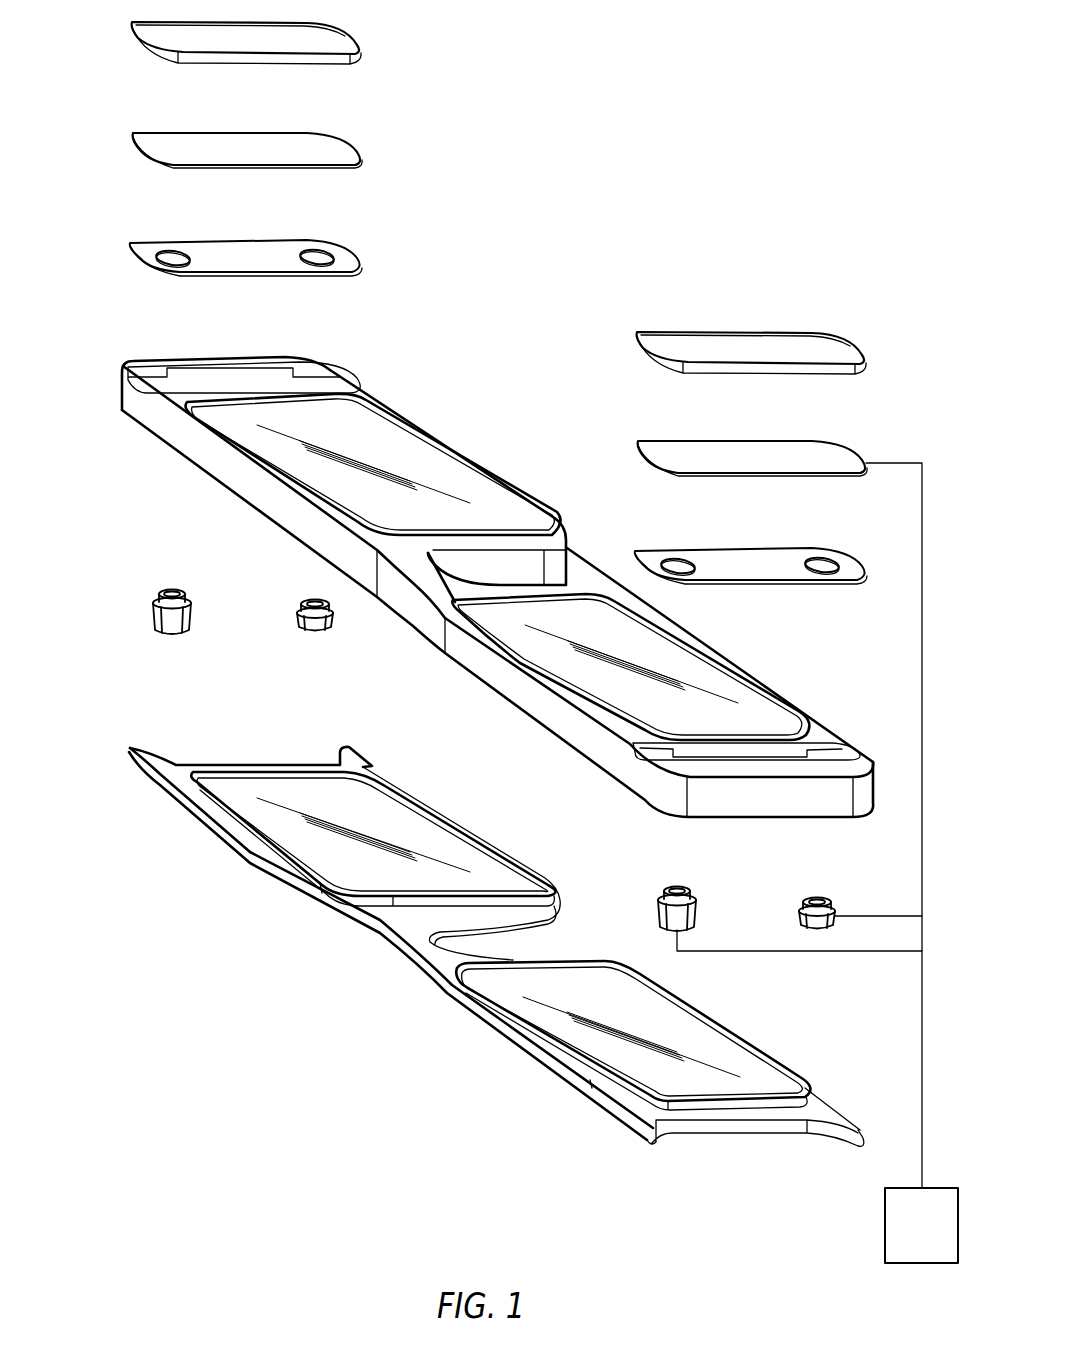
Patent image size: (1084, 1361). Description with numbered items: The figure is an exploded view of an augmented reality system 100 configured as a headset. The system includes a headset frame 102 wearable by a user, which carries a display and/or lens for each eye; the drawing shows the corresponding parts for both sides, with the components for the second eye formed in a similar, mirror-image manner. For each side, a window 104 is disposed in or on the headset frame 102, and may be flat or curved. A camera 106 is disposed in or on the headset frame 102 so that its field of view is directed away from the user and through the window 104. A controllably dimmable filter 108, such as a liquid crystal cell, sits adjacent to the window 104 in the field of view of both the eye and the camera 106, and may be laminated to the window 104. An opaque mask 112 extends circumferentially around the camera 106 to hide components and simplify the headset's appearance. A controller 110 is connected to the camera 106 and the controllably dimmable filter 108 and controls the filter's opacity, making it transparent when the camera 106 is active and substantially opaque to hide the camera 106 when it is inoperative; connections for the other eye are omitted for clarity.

The augmented reality system 100 is at (788, 79).
The headset frame 102 is at (121, 374).
The window 104 is at (130, 26).
The camera 106 is at (152, 604).
The controllably dimmable filter 108 is at (132, 134).
The controller 110 is at (885, 1225).
The opaque mask 112 is at (130, 244).